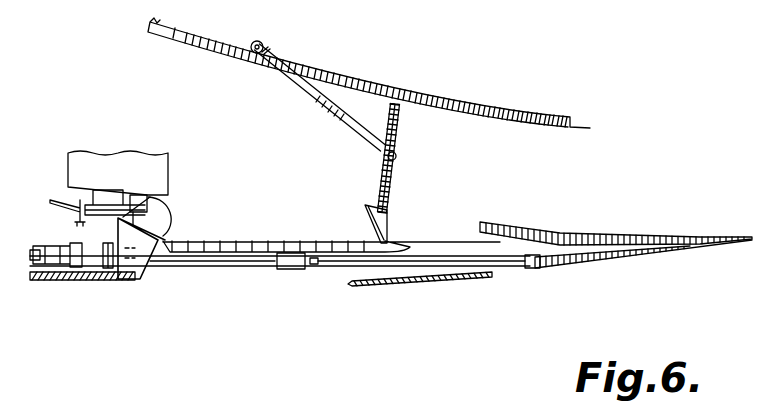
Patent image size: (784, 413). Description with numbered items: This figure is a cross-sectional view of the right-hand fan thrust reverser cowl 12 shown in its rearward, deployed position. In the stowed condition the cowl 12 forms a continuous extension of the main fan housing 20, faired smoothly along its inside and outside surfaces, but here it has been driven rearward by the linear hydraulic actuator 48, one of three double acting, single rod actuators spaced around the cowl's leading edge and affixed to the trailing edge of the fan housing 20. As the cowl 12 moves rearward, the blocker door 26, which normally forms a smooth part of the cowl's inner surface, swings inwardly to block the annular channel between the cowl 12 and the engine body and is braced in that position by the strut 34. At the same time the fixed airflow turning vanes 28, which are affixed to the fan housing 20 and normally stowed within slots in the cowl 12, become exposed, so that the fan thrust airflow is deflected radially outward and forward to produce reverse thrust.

The thrust reverser cowl 12 is at (645, 258).
The main fan housing 20 is at (76, 281).
The blocker door 26 is at (390, 188).
The fixed airflow turning vanes 28 is at (268, 243).
The strut 34 is at (384, 233).
The actuator 48 is at (263, 268).